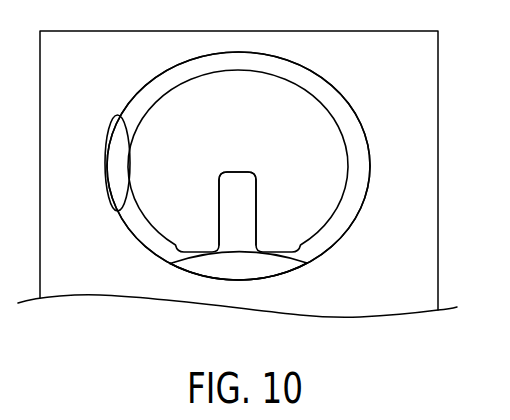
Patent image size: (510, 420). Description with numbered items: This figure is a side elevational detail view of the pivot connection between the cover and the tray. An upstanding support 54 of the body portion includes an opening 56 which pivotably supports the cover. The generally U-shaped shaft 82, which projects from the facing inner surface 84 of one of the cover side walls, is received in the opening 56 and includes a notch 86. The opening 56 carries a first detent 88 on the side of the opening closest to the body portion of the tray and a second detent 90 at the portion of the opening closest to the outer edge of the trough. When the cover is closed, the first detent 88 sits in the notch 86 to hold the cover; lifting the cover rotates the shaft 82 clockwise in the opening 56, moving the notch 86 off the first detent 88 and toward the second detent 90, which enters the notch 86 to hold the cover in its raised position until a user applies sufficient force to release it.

The upstanding support 54 is at (417, 146).
The opening 56 is at (350, 100).
The inner surface 84 is at (352, 133).
The shaft 82 is at (330, 200).
The notch 86 is at (247, 208).
The first detent 88 is at (252, 268).
The second detent 90 is at (108, 164).